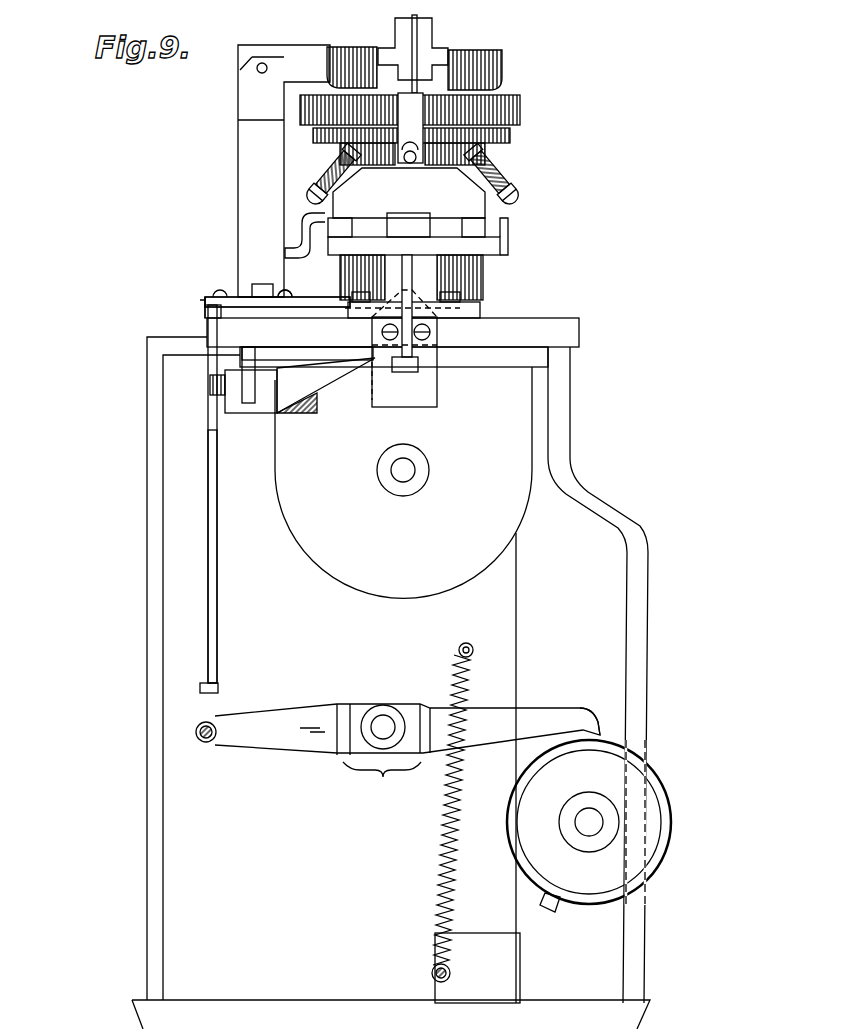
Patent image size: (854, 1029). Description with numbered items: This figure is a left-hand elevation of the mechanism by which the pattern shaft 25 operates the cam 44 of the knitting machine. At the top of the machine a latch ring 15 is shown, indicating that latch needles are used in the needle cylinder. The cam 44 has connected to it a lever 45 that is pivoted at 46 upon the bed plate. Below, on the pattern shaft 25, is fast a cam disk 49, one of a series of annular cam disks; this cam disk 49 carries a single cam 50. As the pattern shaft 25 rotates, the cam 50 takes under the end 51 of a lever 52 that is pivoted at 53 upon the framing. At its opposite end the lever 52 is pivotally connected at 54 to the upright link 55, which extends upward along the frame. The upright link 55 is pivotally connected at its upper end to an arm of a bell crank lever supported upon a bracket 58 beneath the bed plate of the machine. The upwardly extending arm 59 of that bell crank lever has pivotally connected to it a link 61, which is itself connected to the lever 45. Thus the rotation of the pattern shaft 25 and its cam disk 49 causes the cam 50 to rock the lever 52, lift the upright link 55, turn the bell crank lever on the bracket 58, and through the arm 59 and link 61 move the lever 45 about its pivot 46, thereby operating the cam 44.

The latch ring 15 is at (462, 55).
The pattern shaft 25 is at (590, 810).
The cam 44 is at (445, 290).
The lever 45 is at (312, 301).
The pivot 46 is at (287, 295).
The cam disk 49 is at (672, 822).
The cam 50 is at (553, 905).
The end of lever 51 is at (597, 732).
The lever 52 is at (442, 712).
The pivot 53 is at (382, 749).
The pivotal connection 54 is at (205, 742).
The upright link 55 is at (214, 520).
The bracket 58 is at (233, 392).
The upwardly extending arm 59 is at (210, 328).
The link 61 is at (213, 312).